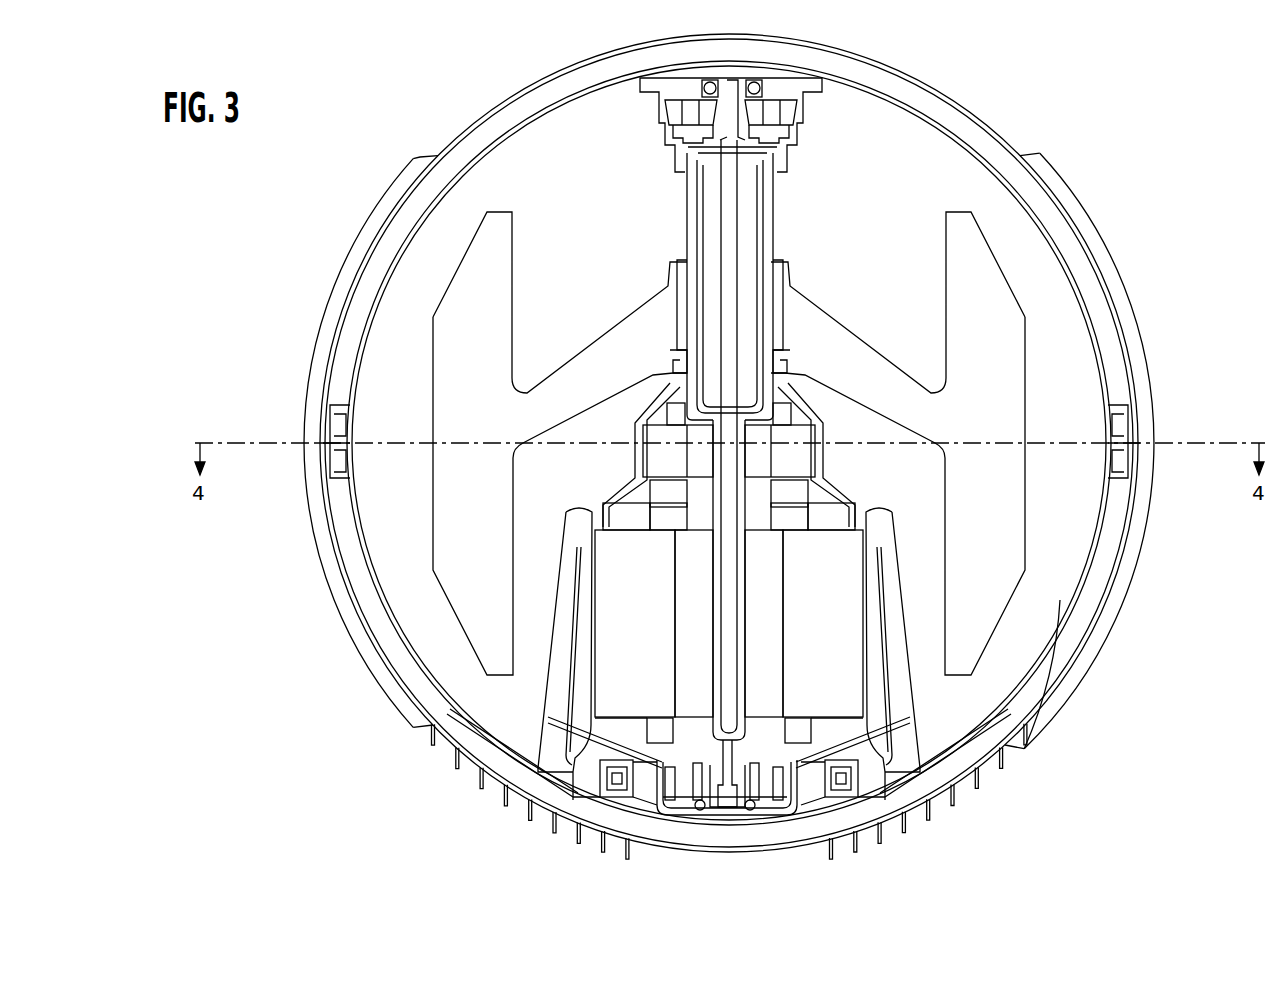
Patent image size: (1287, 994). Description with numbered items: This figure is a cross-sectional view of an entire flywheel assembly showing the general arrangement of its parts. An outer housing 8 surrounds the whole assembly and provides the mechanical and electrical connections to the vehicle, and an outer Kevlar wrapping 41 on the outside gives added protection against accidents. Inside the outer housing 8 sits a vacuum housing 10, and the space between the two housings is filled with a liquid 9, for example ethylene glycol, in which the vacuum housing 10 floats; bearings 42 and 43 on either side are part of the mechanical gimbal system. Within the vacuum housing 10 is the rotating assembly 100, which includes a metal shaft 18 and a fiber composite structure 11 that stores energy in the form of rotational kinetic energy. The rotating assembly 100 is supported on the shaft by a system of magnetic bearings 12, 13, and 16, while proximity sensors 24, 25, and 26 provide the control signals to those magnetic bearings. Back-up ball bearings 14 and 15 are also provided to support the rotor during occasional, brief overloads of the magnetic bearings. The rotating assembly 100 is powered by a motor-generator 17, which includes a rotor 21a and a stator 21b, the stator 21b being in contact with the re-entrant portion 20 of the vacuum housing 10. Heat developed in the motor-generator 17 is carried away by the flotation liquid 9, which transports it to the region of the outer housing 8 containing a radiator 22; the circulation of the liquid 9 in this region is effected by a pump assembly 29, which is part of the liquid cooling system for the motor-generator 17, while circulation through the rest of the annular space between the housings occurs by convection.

The rotating assembly 100 is at (618, 278).
The outer housing 8 is at (1048, 692).
The liquid 9 is at (393, 244).
The vacuum housing 10 is at (496, 137).
The fiber composite structure 11 is at (443, 360).
The magnetic bearing 12 is at (677, 113).
The magnetic bearing 13 is at (858, 775).
The back-up ball bearing 14 is at (756, 84).
The back-up ball bearing 15 is at (660, 810).
The magnetic bearing 16 is at (652, 452).
The motor-generator 17 is at (775, 500).
The metal shaft 18 is at (775, 190).
The re-entrant portion 20 is at (582, 572).
The rotor 21a is at (840, 590).
The stator 21b is at (690, 655).
The radiator 22 is at (1012, 745).
The proximity sensor 24 is at (800, 378).
The proximity sensor 25 is at (850, 533).
The proximity sensor 26 is at (613, 752).
The pump assembly 29 is at (640, 780).
The outer Kevlar wrapping 41 is at (1090, 228).
The bearing 42 is at (1143, 438).
The bearing 43 is at (330, 455).